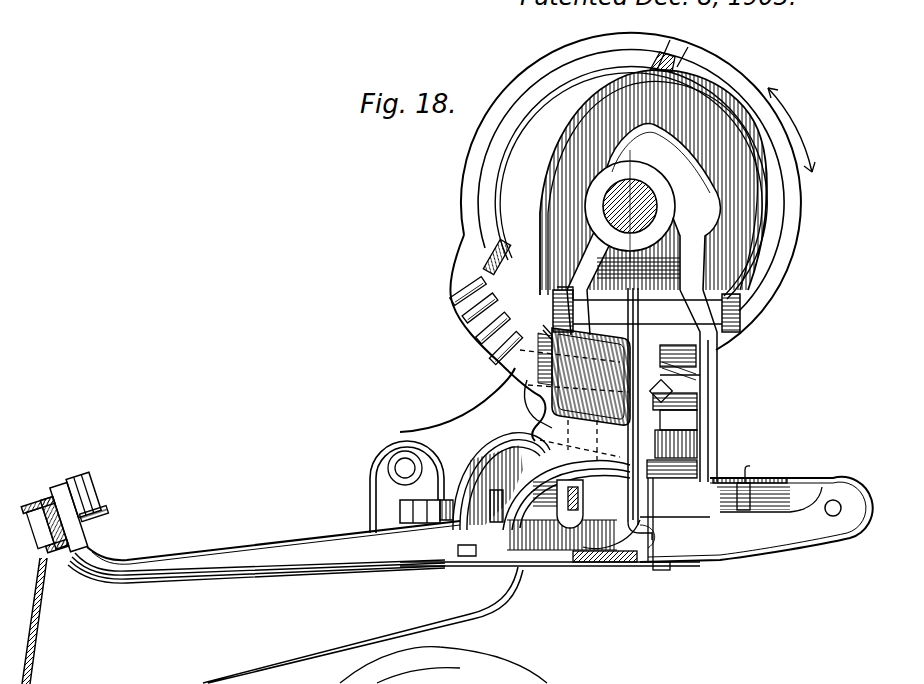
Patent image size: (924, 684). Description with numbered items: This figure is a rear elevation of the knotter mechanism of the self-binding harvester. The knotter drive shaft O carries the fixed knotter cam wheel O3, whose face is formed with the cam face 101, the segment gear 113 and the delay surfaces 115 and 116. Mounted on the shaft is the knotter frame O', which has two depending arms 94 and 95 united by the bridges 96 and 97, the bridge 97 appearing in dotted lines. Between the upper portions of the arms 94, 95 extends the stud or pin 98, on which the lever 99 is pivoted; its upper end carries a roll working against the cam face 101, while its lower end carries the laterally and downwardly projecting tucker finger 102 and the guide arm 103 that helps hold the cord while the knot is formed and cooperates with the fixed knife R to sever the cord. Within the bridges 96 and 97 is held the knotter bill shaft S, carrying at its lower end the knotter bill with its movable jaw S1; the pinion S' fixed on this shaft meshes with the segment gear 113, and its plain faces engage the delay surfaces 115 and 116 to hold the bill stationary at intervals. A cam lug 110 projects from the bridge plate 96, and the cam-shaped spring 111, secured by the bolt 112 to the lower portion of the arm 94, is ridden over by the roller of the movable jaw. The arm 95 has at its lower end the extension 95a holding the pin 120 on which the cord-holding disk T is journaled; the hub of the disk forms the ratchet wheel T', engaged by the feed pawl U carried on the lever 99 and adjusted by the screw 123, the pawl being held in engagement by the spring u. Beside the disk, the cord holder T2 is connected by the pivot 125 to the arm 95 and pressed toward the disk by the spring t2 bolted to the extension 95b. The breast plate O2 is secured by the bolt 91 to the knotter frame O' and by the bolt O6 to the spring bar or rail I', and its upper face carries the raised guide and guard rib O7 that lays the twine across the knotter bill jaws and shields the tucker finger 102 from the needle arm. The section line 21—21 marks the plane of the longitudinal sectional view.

The section line 21 is at (628, 72).
The delay surface 116 is at (534, 100).
The knotter drive shaft O is at (642, 206).
The knotter cam wheel O3 is at (795, 212).
The cam face 101 is at (735, 225).
The delay surface 115 is at (782, 262).
The stud or pin 98 is at (740, 313).
The bridge 97 is at (553, 316).
The segment gear 113 is at (492, 338).
The pinion S' is at (509, 359).
The cam lug 110 is at (543, 445).
The arm of knotter frame 94 is at (432, 440).
The knotter frame O' is at (476, 382).
The bridge plate 96 is at (575, 384).
The lever 99 is at (640, 446).
The tucker finger 102 is at (566, 475).
The spring u is at (715, 383).
The pivot 125 is at (718, 398).
The screw 123 is at (712, 397).
The feed pawl U is at (720, 433).
The arm of knotter frame 95 is at (703, 436).
The extension 95a is at (720, 477).
The pin 120 is at (760, 475).
The spring t2 is at (753, 478).
The extension 95b is at (790, 485).
The bolt 112 is at (395, 466).
The bolt O6 is at (108, 507).
The spring bar or rail I' is at (52, 571).
The bolt 91 is at (398, 513).
The breast plate O2 is at (384, 602).
The cam shaped spring 111 is at (455, 545).
The guide and guard rib O7 is at (496, 508).
The knotter bill shaft S is at (573, 536).
The movable jaw S1 is at (570, 518).
The guide arm 103 is at (613, 562).
The knife R is at (653, 520).
The cord-holding disk T is at (756, 534).
The ratchet wheel T' is at (771, 539).
The cord holder T2 is at (670, 518).